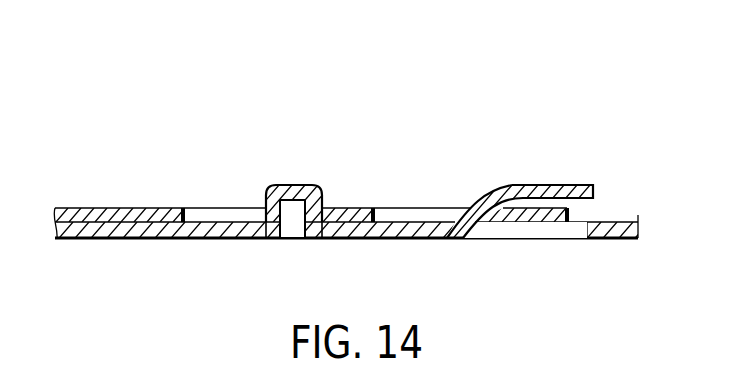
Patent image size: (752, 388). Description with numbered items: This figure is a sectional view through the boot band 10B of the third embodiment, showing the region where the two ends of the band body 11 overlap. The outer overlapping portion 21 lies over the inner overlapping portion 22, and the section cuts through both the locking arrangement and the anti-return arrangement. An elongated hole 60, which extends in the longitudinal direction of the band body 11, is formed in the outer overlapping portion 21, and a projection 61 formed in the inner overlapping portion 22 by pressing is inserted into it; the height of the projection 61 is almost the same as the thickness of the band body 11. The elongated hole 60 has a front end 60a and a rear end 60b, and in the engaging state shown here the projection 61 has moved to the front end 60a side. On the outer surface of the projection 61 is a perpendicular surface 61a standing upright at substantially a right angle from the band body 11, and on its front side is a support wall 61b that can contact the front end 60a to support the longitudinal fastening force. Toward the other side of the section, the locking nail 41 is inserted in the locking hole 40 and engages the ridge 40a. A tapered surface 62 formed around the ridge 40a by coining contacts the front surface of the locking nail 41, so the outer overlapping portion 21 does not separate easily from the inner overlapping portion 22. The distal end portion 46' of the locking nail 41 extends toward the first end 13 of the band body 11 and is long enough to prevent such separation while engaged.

The boot band 10B is at (648, 85).
The band body 11 is at (629, 221).
The first end 13 is at (568, 208).
The outer overlapping portion 21 is at (100, 208).
The inner overlapping portion 22 is at (166, 240).
The locking hole 40 is at (415, 208).
The ridge 40a is at (490, 223).
The locking nail 41 is at (499, 188).
The distal end portion 46' is at (557, 162).
The elongated hole 60 is at (229, 208).
The front end 60a is at (314, 195).
The rear end 60b is at (186, 208).
The projection 61 is at (283, 185).
The perpendicular surface 61a is at (255, 238).
The support wall 61b is at (329, 212).
The tapered surface 62 is at (508, 206).